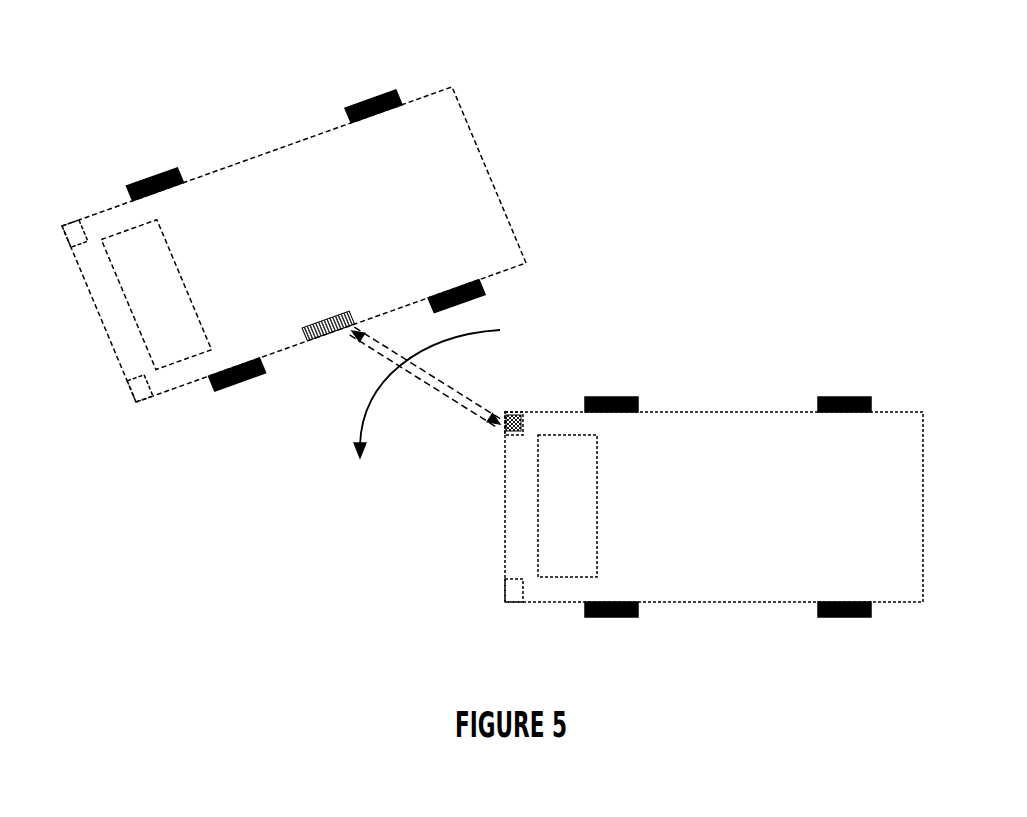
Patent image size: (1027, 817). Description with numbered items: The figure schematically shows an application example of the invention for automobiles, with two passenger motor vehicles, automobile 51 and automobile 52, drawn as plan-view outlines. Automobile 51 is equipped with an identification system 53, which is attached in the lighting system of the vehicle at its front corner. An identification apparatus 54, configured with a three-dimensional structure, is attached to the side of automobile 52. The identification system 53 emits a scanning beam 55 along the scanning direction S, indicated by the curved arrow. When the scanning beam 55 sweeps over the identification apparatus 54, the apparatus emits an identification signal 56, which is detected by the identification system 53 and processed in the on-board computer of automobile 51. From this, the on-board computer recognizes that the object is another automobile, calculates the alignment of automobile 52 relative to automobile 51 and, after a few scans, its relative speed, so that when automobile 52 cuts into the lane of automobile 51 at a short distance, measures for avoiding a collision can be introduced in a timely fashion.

The automobile 51 is at (938, 637).
The automobile 52 is at (437, 65).
The identification system 53 is at (515, 417).
The identification apparatus 54 is at (333, 338).
The scanning beam 55 is at (470, 402).
The identification signal 56 is at (468, 408).
The scanning direction S is at (433, 386).